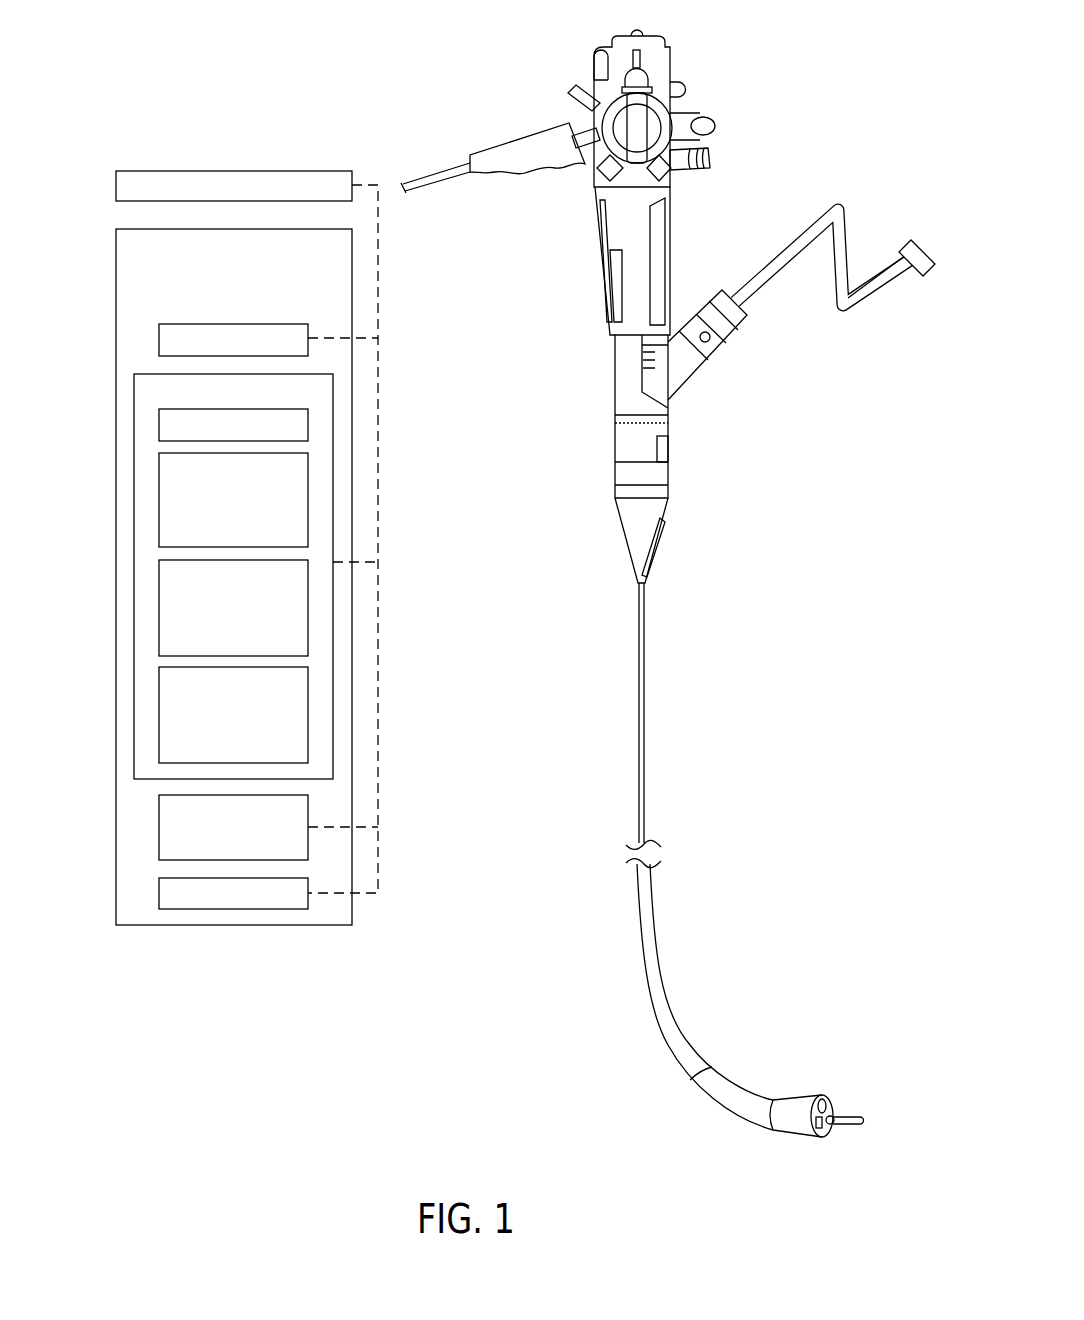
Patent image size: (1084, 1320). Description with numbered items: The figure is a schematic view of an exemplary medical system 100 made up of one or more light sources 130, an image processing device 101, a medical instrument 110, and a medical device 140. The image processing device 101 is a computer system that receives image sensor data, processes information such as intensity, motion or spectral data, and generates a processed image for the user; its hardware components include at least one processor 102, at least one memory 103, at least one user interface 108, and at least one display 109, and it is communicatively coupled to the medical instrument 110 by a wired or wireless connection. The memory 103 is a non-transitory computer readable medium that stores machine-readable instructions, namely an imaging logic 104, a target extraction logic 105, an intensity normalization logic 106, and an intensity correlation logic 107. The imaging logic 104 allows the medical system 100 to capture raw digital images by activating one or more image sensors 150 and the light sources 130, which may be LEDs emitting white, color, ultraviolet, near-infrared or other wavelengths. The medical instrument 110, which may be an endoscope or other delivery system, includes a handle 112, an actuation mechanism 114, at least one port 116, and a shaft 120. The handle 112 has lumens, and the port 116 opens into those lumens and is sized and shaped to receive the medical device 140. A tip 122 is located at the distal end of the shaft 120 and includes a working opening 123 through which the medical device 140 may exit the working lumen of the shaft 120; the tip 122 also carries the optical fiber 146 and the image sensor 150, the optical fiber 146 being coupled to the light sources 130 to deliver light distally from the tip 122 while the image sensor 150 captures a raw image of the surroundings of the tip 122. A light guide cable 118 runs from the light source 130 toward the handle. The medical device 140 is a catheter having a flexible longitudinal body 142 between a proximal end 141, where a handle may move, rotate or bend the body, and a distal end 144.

The medical system 100 is at (200, 95).
The image processing device 101 is at (116, 243).
The processor 102 is at (159, 338).
The memory 103 is at (134, 385).
The imaging logic 104 is at (159, 425).
The target extraction logic 105 is at (159, 500).
The intensity normalization logic 106 is at (159, 608).
The intensity correlation logic 107 is at (159, 714).
The user interface 108 is at (159, 828).
The display 109 is at (159, 893).
The medical instrument 110 is at (625, 620).
The handle 112 is at (674, 250).
The actuation mechanism 114 is at (687, 102).
The port 116 is at (717, 353).
The light guide cable 118 is at (452, 163).
The shaft 120 is at (664, 970).
The tip 122 is at (840, 1092).
The working opening 123 is at (831, 1126).
The light source 130 is at (116, 184).
The medical device 140 is at (902, 309).
The proximal end 141 is at (922, 243).
The longitudinal body 142 is at (890, 268).
The distal end 144 is at (871, 1126).
The optical fiber 146 is at (820, 1098).
The image sensor 150 is at (816, 1139).